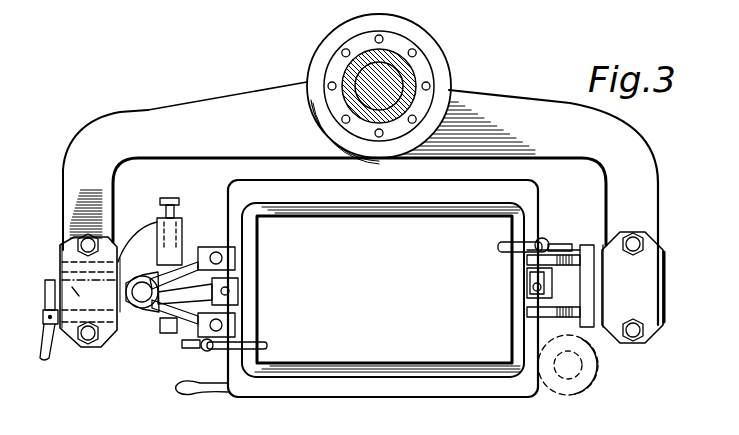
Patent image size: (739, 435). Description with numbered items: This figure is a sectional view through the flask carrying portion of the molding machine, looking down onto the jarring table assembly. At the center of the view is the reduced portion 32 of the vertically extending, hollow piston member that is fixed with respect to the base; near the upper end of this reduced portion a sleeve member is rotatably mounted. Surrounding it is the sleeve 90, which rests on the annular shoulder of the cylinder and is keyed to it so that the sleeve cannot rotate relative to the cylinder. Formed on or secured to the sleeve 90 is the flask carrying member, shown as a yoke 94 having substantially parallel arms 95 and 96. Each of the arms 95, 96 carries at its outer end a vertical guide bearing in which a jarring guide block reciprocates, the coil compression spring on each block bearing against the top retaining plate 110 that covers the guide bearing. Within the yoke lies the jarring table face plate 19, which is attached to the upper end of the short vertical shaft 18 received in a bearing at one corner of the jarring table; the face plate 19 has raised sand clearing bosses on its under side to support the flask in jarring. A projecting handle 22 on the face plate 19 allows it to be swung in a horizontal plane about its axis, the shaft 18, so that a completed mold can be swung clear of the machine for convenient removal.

The short vertical shaft 18 is at (572, 372).
The jarring table face plate 19 is at (437, 390).
The projecting handle 22 is at (194, 392).
The upwardly extending reduced portion 32 is at (412, 80).
The sleeve 90 is at (328, 44).
The yoke 94 is at (221, 100).
The arm 95 is at (70, 198).
The arm 96 is at (648, 213).
The top retaining plate 110 is at (78, 282).